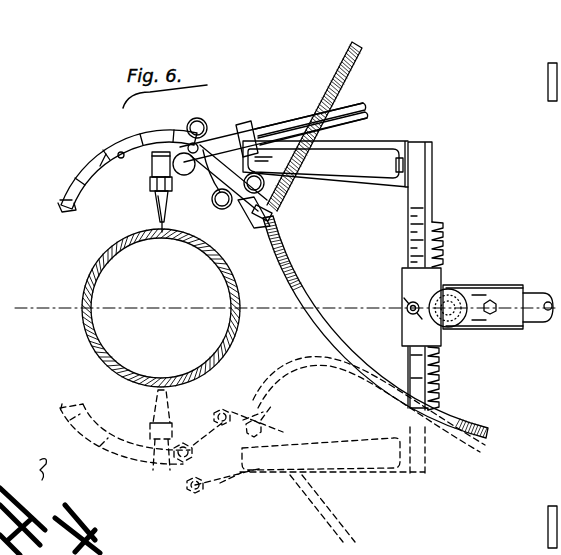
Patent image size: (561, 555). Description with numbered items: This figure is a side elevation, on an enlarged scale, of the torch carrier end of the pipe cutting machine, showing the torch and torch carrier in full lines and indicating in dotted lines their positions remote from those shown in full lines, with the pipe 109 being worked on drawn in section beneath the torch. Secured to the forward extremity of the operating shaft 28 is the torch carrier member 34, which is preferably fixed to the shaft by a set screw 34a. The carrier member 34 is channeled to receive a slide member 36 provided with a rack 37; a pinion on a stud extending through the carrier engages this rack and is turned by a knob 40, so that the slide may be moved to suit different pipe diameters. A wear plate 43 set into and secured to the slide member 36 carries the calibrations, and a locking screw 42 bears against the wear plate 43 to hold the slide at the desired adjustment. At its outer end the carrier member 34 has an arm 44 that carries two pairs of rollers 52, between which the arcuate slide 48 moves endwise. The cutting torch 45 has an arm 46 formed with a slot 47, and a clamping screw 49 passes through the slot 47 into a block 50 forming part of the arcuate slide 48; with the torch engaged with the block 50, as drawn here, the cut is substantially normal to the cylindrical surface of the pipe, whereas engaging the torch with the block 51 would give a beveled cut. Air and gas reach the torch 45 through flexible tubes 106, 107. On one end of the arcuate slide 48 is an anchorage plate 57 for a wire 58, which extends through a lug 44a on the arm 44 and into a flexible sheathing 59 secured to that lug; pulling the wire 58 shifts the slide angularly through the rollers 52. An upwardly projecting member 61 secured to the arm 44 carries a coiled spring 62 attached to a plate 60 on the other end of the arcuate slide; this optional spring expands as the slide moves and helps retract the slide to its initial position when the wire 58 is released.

The operating shaft 28 is at (539, 295).
The torch carrier member 34 is at (517, 284).
The set screw 34a is at (492, 314).
The slide member 36 is at (433, 200).
The rack 37 is at (443, 240).
The knob 40 is at (452, 296).
The locking screw 42 is at (407, 302).
The wear plate 43 is at (409, 238).
The arm 44 is at (393, 185).
The lug 44a is at (278, 211).
The cutting torch 45 is at (153, 197).
The arm 46 is at (214, 130).
The slot 47 is at (240, 124).
The arcuate slide 48 is at (88, 167).
The clamping screw 49 is at (183, 140).
The block 50 is at (225, 172).
The block 51 is at (113, 152).
The rollers 52 is at (197, 118).
The anchorage plate 57 is at (65, 210).
The wire 58 is at (72, 199).
The flexible sheathing 59 is at (291, 276).
The plate 60 is at (288, 192).
The upwardly projecting member 61 is at (325, 98).
The coiled spring 62 is at (345, 98).
The flexible tube 106 is at (368, 106).
The flexible tube 107 is at (368, 116).
The pipe 109 is at (86, 278).